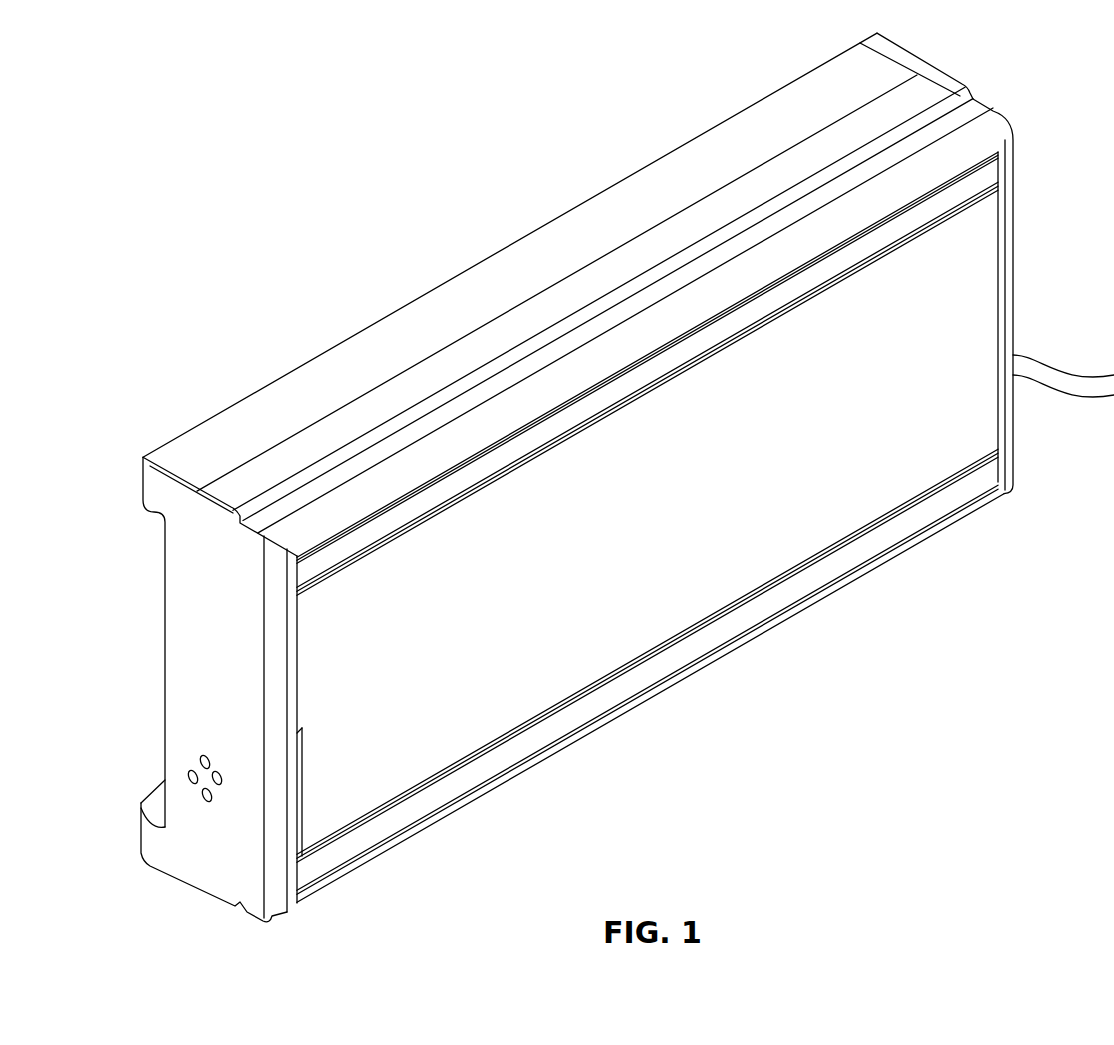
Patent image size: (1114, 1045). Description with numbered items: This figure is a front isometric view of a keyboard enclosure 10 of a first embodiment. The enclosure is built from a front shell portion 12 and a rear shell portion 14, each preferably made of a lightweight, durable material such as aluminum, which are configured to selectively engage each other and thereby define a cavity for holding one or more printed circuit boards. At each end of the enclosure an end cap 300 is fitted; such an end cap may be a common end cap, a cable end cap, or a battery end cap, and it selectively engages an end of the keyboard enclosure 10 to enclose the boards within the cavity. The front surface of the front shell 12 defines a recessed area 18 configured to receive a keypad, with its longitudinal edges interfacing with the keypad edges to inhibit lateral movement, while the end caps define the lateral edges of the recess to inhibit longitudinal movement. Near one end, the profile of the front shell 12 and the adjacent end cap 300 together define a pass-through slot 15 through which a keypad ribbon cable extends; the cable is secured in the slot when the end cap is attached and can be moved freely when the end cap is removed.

The keyboard enclosure 10 is at (184, 116).
The front shell portion 12 is at (793, 615).
The rear shell portion 14 is at (677, 149).
The pass-through slot 15 is at (297, 817).
The recessed area 18 is at (538, 687).
The end cap 300 is at (143, 487).